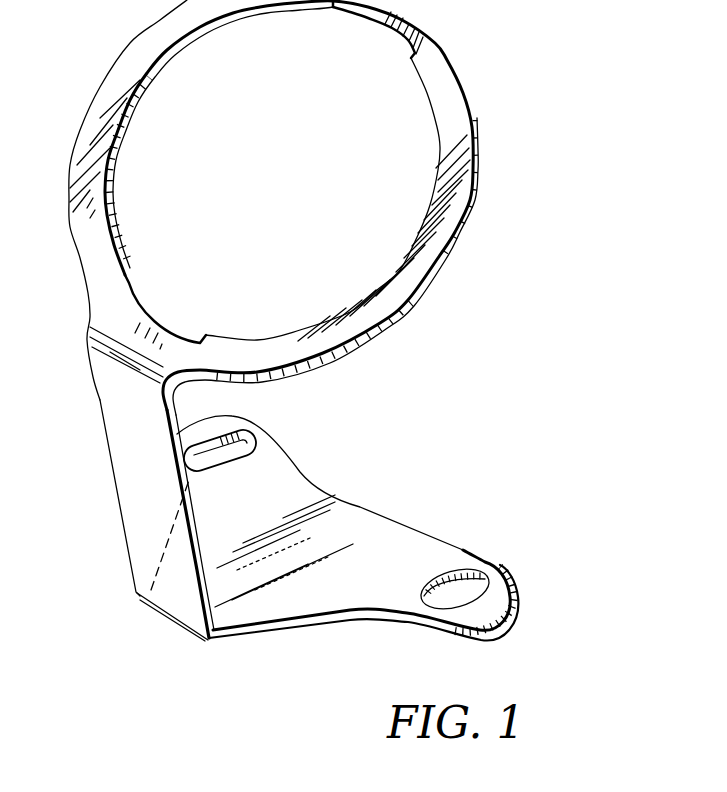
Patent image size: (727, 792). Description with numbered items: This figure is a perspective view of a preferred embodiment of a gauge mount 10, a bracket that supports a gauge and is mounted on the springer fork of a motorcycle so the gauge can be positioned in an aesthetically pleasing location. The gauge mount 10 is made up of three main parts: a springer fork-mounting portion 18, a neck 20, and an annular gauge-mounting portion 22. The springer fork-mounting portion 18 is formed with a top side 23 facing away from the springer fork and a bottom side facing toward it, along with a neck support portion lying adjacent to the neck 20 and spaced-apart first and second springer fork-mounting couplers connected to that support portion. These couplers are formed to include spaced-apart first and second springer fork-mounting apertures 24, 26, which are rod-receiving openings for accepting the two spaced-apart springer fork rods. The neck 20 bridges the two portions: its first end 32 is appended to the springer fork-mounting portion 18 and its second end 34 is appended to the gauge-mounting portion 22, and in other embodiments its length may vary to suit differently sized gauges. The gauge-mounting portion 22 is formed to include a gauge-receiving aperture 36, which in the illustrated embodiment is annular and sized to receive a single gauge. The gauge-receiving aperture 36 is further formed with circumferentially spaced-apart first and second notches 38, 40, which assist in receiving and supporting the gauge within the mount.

The gauge mount 10 is at (507, 134).
The springer fork-mounting portion 18 is at (328, 617).
The neck 20 is at (140, 519).
The annular gauge-mounting portion 22 is at (407, 294).
The top side 23 is at (418, 538).
The first springer fork-mounting aperture 24 is at (478, 573).
The second springer fork-mounting aperture 26 is at (247, 433).
The first end 32 is at (212, 642).
The second end 34 is at (120, 360).
The gauge-receiving aperture 36 is at (353, 157).
The first notch 38 is at (172, 330).
The second notch 40 is at (362, 17).